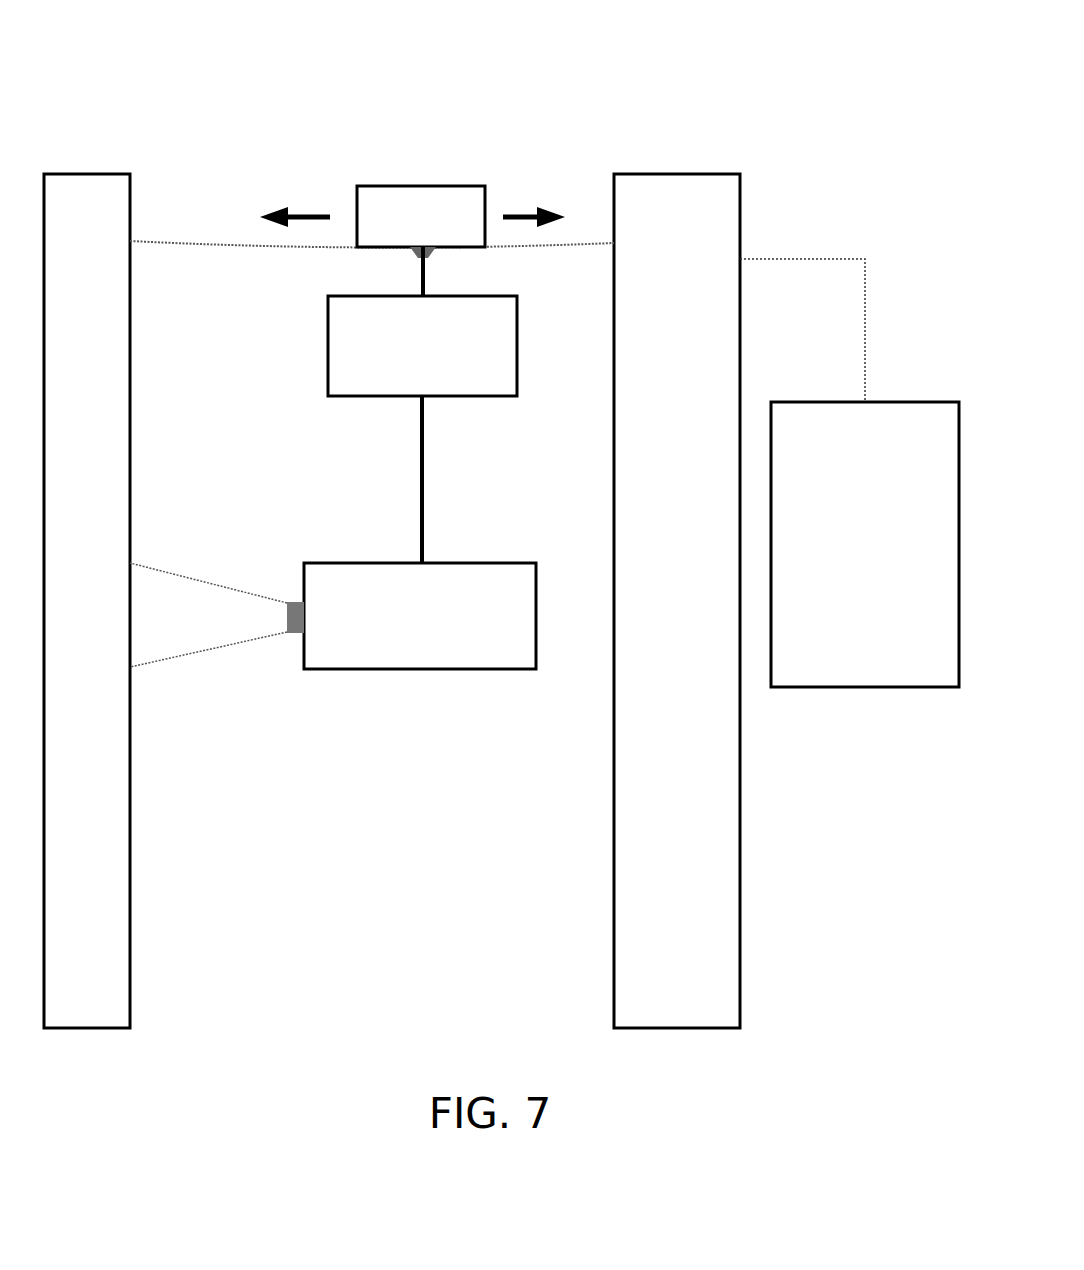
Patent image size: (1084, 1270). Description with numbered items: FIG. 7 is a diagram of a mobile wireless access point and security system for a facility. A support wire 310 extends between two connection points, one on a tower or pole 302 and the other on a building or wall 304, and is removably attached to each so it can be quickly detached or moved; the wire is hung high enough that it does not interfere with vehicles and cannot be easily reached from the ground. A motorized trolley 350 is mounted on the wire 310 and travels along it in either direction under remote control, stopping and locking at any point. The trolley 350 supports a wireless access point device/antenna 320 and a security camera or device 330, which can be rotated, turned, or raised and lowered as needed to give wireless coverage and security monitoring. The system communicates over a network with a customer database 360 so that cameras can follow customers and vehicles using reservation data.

The tower or pole 302 is at (87, 601).
The building or wall 304 is at (677, 601).
The support wire 310 is at (235, 245).
The wireless access point device/antenna 320 is at (422, 321).
The security camera or device 330 is at (333, 532).
The trolley 350 is at (375, 200).
The customer database 360 is at (849, 473).